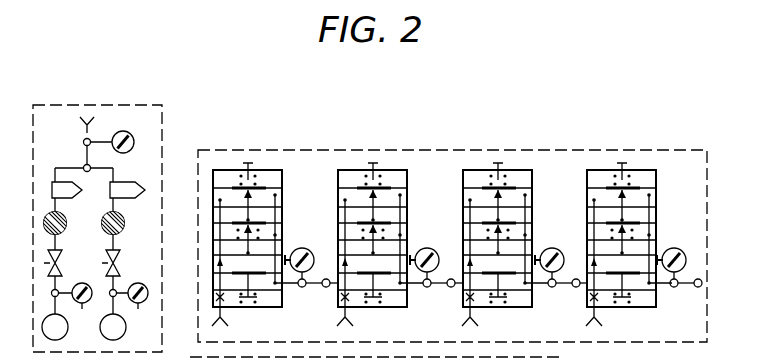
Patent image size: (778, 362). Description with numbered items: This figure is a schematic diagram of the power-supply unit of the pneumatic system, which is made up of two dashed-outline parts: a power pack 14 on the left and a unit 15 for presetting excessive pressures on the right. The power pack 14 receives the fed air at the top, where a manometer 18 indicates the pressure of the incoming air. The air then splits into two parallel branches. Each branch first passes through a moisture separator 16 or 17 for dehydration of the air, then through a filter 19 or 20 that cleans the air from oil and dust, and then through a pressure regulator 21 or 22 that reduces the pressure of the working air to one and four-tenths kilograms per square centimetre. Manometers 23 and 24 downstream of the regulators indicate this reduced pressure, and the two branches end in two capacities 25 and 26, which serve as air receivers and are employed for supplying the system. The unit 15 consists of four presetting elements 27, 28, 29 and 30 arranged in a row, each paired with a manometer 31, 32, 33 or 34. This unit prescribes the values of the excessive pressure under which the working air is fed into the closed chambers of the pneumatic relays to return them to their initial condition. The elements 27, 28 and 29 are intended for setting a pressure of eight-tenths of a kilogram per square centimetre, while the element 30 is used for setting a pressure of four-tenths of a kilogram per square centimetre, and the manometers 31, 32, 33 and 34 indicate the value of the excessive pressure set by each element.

The power pack 14 is at (162, 140).
The unit for presetting excessive pressures 15 is at (707, 180).
The moisture separator 16 is at (80, 192).
The moisture separator 17 is at (145, 189).
The manometer 18 is at (143, 131).
The filter 19 is at (63, 232).
The filter 20 is at (125, 223).
The pressure regulator 21 is at (62, 263).
The pressure regulator 22 is at (119, 262).
The manometer 23 is at (85, 311).
The manometer 24 is at (131, 307).
The capacity 25 is at (60, 339).
The capacity 26 is at (110, 340).
The presetting element 27 is at (282, 180).
The presetting element 28 is at (407, 180).
The presetting element 29 is at (532, 180).
The presetting element 30 is at (656, 180).
The manometer 31 is at (319, 243).
The manometer 32 is at (444, 243).
The manometer 33 is at (569, 243).
The manometer 34 is at (691, 243).